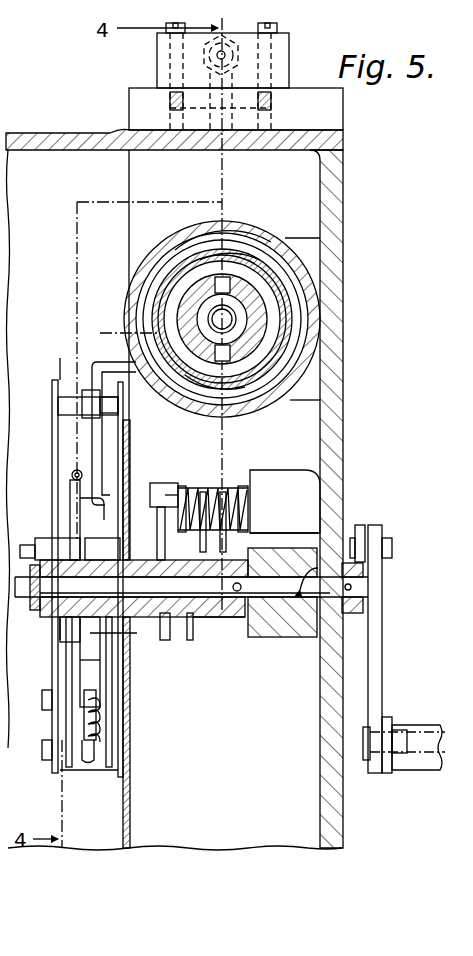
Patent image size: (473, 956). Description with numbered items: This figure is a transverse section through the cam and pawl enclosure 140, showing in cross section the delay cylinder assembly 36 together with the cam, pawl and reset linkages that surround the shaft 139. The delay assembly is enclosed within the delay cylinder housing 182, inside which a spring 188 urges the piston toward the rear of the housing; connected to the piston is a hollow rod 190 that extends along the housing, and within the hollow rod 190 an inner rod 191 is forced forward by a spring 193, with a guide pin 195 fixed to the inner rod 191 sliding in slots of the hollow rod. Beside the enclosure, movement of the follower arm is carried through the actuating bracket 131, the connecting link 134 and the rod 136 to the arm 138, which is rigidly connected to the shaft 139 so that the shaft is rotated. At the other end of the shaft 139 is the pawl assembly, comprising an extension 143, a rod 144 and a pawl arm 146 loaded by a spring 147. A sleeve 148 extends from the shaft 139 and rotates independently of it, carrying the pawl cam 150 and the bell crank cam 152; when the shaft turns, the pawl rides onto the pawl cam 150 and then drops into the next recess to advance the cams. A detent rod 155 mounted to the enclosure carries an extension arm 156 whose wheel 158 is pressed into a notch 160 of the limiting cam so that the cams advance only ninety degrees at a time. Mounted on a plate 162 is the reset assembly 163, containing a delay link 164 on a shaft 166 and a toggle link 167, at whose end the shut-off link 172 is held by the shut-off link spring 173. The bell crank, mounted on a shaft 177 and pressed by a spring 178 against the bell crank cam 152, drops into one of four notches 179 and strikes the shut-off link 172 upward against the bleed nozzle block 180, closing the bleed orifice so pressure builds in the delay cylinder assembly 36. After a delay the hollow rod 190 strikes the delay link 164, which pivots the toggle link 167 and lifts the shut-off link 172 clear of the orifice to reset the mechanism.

The delay cylinder assembly 36 is at (271, 233).
The actuating bracket 131 is at (415, 772).
The connecting link 134 is at (382, 648).
The rod 136 is at (393, 542).
The arm 138 is at (362, 525).
The shaft 139 is at (365, 587).
The cam and pawl enclosure 140 is at (345, 214).
The extension 143 is at (226, 523).
The rod 144 is at (218, 497).
The pawl arm 146 is at (248, 542).
The spring 147 is at (226, 529).
The sleeve 148 is at (207, 618).
The pawl cam 150 is at (203, 622).
The bell crank cam 152 is at (83, 553).
The rod 155 is at (206, 489).
The extension arm 156 is at (191, 488).
The wheel 158 is at (173, 585).
The notch 160 is at (170, 622).
The plate 162 is at (60, 380).
The reset assembly 163 is at (58, 356).
The delay link 164 is at (118, 360).
The shaft 166 is at (66, 401).
The toggle link 167 is at (82, 500).
The shut-off link 172 is at (97, 703).
The shut-off link spring 173 is at (100, 726).
The shaft 177 is at (103, 673).
The spring 178 is at (83, 728).
The notch 179 is at (82, 532).
The bleed nozzle block 180 is at (68, 530).
The delay cylinder housing 182 is at (293, 262).
The spring 188 is at (185, 319).
The hollow rod 190 is at (264, 327).
The inner rod 191 is at (234, 321).
The spring 193 is at (236, 303).
The guide pin 195 is at (186, 238).